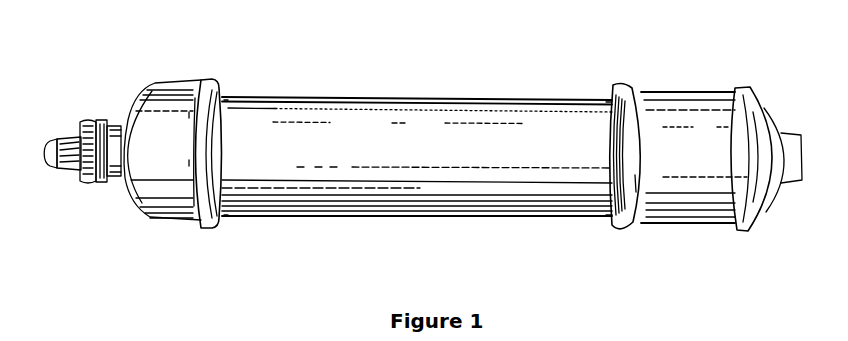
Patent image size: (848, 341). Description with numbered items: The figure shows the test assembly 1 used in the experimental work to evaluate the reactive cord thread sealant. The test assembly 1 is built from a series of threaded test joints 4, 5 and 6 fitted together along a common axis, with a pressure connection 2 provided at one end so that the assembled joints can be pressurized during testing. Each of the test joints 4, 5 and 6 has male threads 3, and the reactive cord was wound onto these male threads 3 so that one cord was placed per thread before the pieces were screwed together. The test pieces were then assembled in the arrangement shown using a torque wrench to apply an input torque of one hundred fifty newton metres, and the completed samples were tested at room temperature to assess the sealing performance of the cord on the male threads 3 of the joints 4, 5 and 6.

The test assembly 1 is at (393, 80).
The pressure connection 2 is at (77, 138).
The male threads 3 is at (217, 96).
The test joint 4 is at (213, 75).
The test joint 5 is at (627, 80).
The test joint 6 is at (763, 86).